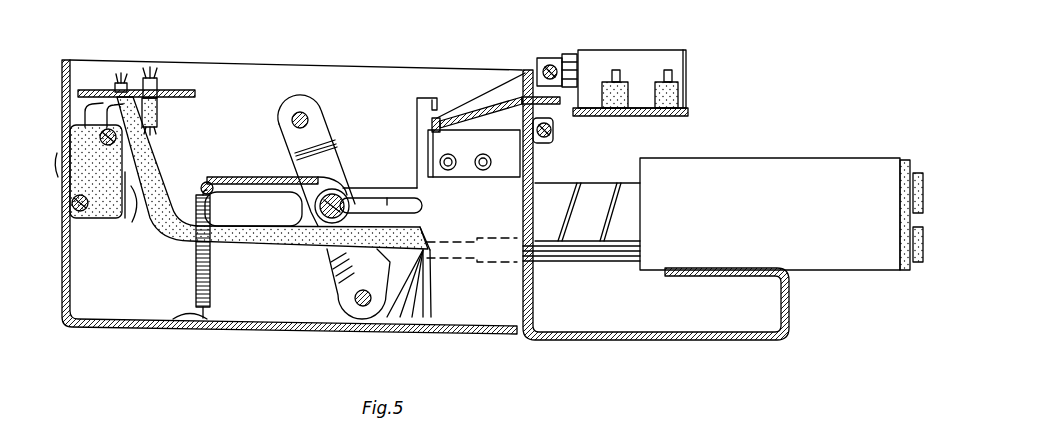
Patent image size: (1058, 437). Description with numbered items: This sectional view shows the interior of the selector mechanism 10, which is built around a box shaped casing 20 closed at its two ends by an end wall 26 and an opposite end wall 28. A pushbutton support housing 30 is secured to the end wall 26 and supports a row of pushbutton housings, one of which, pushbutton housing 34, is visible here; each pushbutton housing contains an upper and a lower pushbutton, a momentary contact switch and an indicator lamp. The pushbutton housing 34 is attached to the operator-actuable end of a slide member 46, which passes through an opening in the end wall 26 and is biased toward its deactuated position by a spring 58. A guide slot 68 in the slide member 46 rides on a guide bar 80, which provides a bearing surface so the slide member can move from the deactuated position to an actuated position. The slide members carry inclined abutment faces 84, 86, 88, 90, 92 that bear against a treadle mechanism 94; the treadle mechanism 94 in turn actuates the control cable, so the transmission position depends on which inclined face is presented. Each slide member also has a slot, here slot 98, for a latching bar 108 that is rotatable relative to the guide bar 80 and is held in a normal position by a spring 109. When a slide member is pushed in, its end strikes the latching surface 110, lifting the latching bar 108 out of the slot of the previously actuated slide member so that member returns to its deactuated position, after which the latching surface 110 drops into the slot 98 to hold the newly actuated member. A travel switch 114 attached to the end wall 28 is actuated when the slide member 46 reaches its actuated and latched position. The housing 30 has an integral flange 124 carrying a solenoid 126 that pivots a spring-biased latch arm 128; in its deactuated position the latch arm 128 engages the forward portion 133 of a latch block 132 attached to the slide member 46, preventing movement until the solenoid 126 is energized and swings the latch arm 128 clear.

The selector mechanism 10 is at (329, 44).
The box shaped casing 20 is at (238, 334).
The end wall 26 is at (526, 73).
The end wall 28 is at (61, 82).
The pushbutton support housing 30 is at (664, 346).
The pushbutton housing 34 is at (824, 256).
The slide member 46 is at (585, 200).
The spring 58 is at (617, 213).
The guide slot 68 is at (392, 198).
The guide bar 80 is at (340, 196).
The abutment face 84 is at (428, 293).
The abutment face 86 is at (414, 318).
The abutment face 88 is at (417, 289).
The abutment face 90 is at (392, 318).
The abutment face 92 is at (358, 288).
The treadle mechanism 94 is at (340, 138).
The slot 98 is at (296, 222).
The latching bar 108 is at (239, 177).
The spring 109 is at (188, 269).
The latching surface 110 is at (201, 188).
The travel switch 114 is at (132, 219).
The integral flange 124 is at (662, 120).
The solenoid 126 is at (670, 60).
The latch arm 128 is at (488, 100).
The latch block 132 is at (502, 168).
The forward portion 133 is at (434, 178).